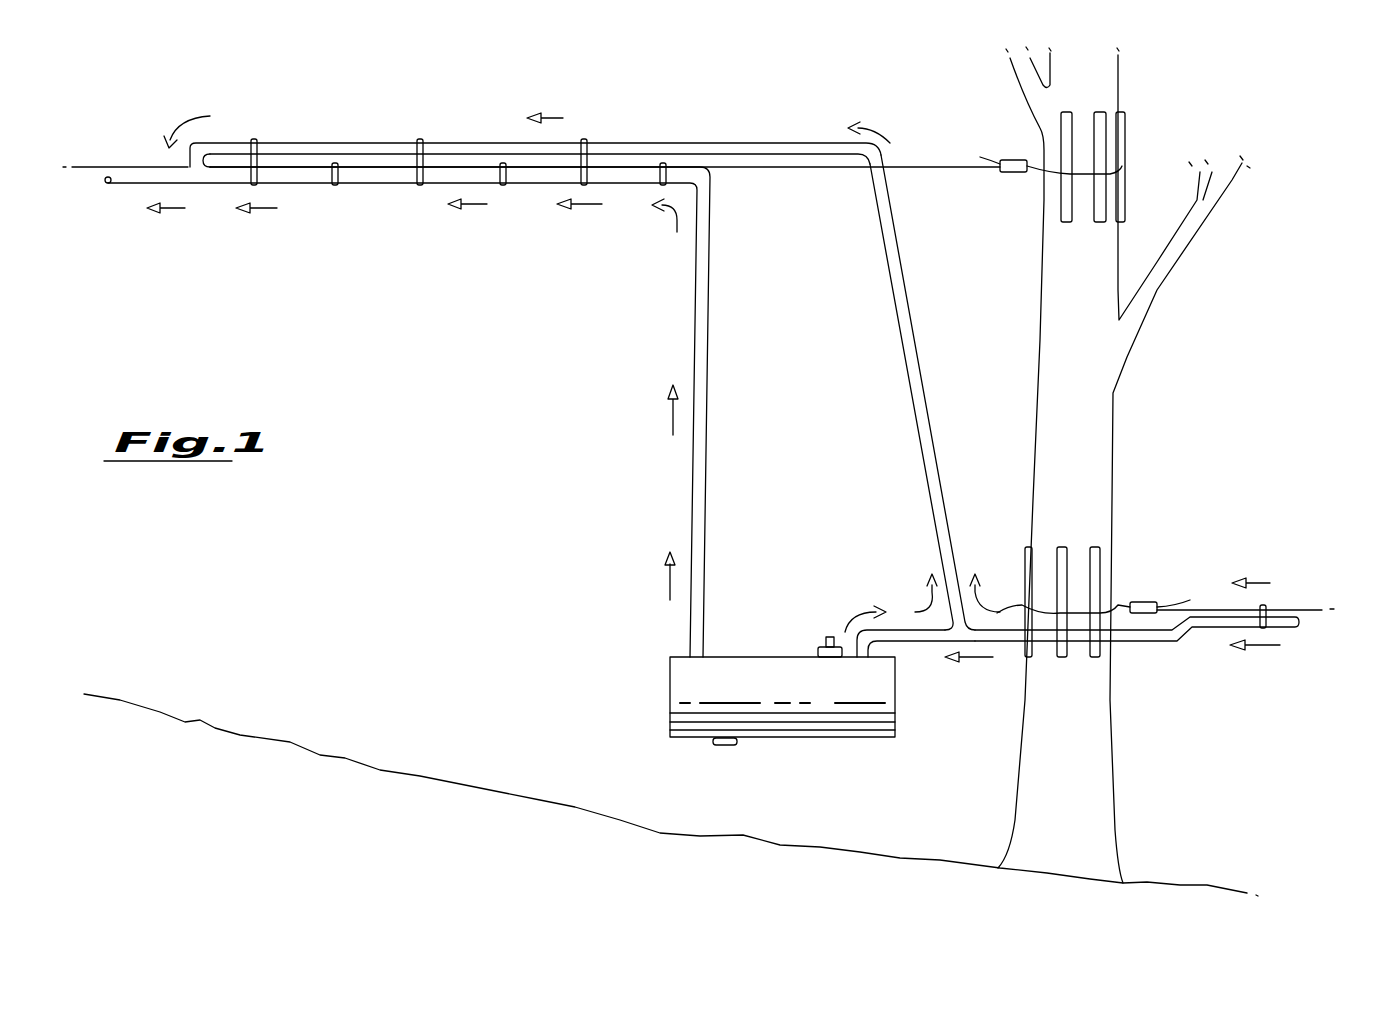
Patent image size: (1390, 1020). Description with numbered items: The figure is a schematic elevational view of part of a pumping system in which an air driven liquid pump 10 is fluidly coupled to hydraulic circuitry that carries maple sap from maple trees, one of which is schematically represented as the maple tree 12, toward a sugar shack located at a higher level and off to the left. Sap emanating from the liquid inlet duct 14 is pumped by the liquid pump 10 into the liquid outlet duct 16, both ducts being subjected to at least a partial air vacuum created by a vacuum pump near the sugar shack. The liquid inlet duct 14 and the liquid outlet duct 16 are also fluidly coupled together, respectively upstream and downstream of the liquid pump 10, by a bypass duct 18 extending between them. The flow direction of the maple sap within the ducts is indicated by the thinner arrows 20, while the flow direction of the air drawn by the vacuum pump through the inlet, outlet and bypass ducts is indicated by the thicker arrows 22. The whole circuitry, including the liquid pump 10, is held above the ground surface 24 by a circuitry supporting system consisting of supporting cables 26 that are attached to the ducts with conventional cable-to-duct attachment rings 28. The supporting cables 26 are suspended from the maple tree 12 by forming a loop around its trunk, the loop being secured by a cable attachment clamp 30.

The air driven liquid pump 10 is at (590, 682).
The maple tree 12 is at (1090, 460).
The liquid inlet duct 14 is at (925, 640).
The liquid outlet duct 16 is at (700, 481).
The bypass duct 18 is at (908, 370).
The thinner arrows 20 is at (587, 207).
The thicker arrows 22 is at (473, 200).
The ground surface 24 is at (355, 760).
The supporting cables 26 is at (767, 163).
The cable-to-duct attachment rings 28 is at (663, 168).
The cable attachment clamp 30 is at (1010, 172).